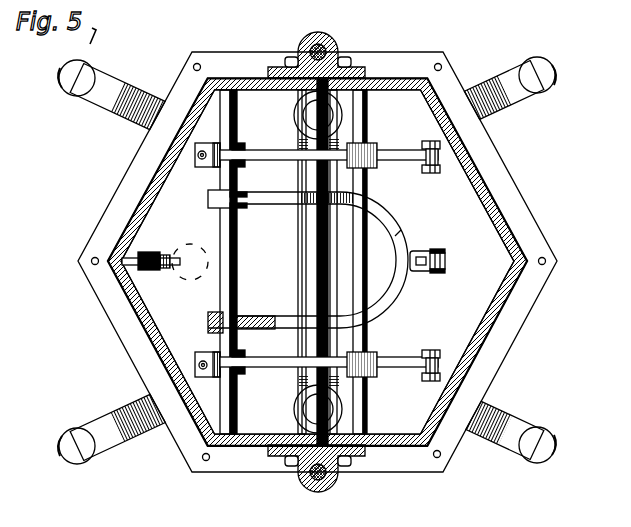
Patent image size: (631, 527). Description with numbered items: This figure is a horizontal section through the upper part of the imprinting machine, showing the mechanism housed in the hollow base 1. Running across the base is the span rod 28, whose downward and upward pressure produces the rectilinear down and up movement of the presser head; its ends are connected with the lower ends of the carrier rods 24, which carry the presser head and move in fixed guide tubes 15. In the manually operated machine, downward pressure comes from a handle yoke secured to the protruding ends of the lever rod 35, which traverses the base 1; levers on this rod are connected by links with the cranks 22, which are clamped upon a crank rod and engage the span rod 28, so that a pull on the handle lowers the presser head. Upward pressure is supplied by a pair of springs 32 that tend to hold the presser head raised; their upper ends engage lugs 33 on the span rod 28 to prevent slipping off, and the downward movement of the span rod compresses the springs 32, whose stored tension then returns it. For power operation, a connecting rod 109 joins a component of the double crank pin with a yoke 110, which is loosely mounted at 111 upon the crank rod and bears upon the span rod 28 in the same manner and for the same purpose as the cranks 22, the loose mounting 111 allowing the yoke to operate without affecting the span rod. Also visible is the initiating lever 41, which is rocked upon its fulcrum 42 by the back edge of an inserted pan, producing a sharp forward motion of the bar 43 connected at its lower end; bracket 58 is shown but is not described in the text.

The hollow base 1 is at (433, 97).
The fixed guide tubes 15 is at (331, 46).
The cranks 22 is at (260, 156).
The carrier rods 24 is at (320, 34).
The span rod 28 is at (318, 221).
The springs 32 is at (325, 106).
The lugs 33 is at (338, 112).
The lever rod 35 is at (370, 98).
The initiating lever 41 is at (152, 257).
The fulcrum 42 is at (158, 268).
The bar 43 is at (168, 248).
The end brackets 58 is at (380, 144).
The connecting rod 109 is at (445, 261).
The yoke 110 is at (393, 236).
The loose mounting 111 is at (217, 312).